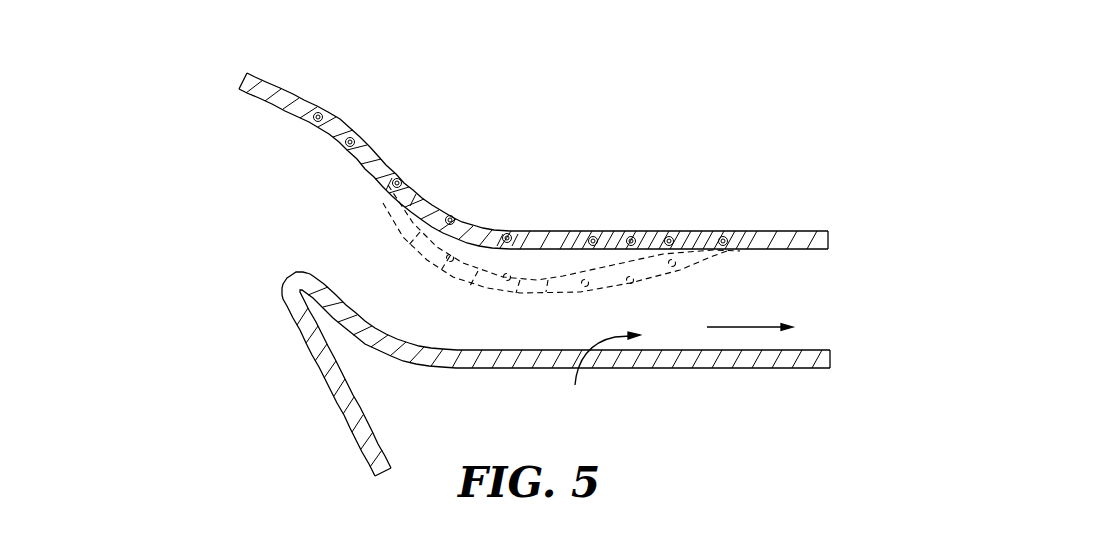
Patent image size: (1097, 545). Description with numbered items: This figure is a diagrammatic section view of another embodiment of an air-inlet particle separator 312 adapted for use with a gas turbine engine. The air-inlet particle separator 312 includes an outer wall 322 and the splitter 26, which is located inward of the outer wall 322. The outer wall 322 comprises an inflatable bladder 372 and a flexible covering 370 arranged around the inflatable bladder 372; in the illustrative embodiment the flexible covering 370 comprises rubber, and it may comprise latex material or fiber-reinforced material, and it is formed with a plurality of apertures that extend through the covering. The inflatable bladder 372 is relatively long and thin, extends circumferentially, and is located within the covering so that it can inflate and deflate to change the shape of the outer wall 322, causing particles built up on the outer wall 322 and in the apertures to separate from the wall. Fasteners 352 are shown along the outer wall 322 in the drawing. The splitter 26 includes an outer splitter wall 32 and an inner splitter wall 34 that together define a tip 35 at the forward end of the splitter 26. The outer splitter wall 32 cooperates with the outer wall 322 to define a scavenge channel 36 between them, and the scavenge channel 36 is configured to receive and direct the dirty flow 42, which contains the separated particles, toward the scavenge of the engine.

The air-inlet particle separator 312 is at (818, 110).
The fastener 352 is at (438, 196).
The outer wall 322 is at (514, 226).
The flexible covering 370 is at (572, 226).
The inflatable bladder 372 is at (652, 231).
The splitter 26 is at (300, 360).
The tip 35 is at (300, 272).
The outer splitter wall 32 is at (348, 300).
The inner splitter wall 34 is at (352, 436).
The scavenge channel 36 is at (601, 375).
The dirty flow 42 is at (745, 327).